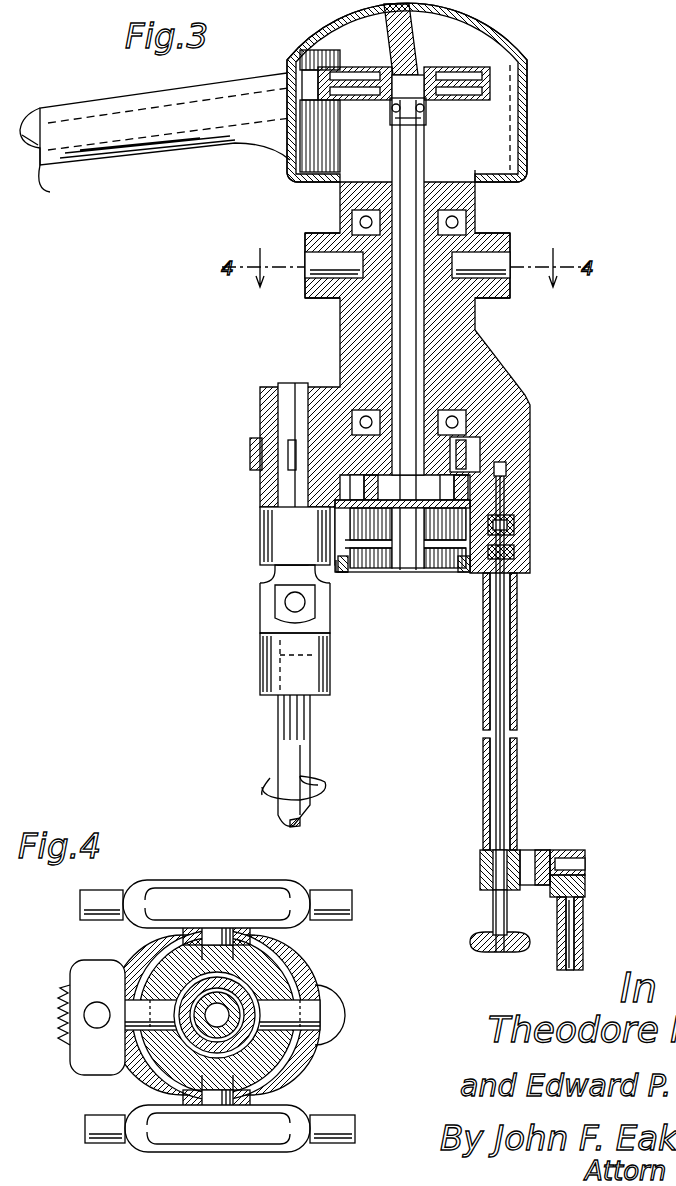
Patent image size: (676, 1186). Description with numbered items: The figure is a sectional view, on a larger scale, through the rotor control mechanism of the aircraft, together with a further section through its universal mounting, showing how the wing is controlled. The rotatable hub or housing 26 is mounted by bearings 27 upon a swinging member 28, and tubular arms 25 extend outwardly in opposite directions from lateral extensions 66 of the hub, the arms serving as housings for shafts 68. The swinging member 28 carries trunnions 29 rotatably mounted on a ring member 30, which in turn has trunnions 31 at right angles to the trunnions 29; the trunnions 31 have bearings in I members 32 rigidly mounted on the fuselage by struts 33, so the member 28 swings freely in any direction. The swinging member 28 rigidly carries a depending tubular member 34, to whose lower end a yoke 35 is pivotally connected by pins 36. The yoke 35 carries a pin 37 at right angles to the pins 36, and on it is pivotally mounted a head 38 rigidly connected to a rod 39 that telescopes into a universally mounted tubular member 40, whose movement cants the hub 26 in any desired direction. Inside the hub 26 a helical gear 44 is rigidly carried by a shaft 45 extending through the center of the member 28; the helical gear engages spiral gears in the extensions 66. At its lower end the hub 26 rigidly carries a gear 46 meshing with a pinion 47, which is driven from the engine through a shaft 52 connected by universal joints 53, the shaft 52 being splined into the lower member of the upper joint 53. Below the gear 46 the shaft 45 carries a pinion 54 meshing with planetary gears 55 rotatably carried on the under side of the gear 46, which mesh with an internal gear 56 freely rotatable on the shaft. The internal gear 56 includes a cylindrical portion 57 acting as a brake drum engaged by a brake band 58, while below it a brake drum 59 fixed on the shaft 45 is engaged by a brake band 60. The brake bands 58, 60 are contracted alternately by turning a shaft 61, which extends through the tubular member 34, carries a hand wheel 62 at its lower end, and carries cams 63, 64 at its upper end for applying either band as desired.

In FIG. 3, the arm 25 is at (158, 150).
In FIG. 3, the rotatable hub or housing 26 is at (515, 40).
In FIG. 3, the bearings 27 is at (458, 222).
In FIG. 3, the swinging member 28 is at (470, 360).
In FIG. 4, the swinging member 28 is at (80, 1065).
In FIG. 3, the trunnions 29 is at (305, 278).
In FIG. 4, the trunnions 29 is at (305, 1015).
In FIG. 3, the ring member 30 is at (505, 240).
In FIG. 4, the ring member 30 is at (283, 960).
In FIG. 4, the trunnions 31 is at (205, 890).
In FIG. 4, the I members 32 is at (172, 890).
In FIG. 4, the struts 33 is at (320, 892).
In FIG. 3, the depending tubular member 34 is at (517, 686).
In FIG. 3, the yoke 35 is at (542, 850).
In FIG. 3, the pins 36 is at (482, 864).
In FIG. 3, the pin 37 is at (570, 855).
In FIG. 3, the head 38 is at (585, 890).
In FIG. 3, the rod 39 is at (584, 928).
In FIG. 3, the tubular member 40 is at (584, 940).
In FIG. 3, the helical gear 44 is at (490, 100).
In FIG. 3, the shaft 45 is at (408, 336).
In FIG. 3, the gear 46 is at (480, 450).
In FIG. 3, the pinion 47 is at (250, 455).
In FIG. 4, the pinion 47 is at (60, 992).
In FIG. 3, the shaft 52 is at (302, 752).
In FIG. 3, the universal joints 53 is at (318, 652).
In FIG. 3, the pinion 54 is at (432, 502).
In FIG. 3, the planetary gears 55 is at (350, 487).
In FIG. 3, the internal gear 56 is at (364, 497).
In FIG. 3, the cylindrical portion 57 is at (462, 568).
In FIG. 3, the brake band 58 is at (336, 528).
In FIG. 3, the brake drum 59 is at (342, 572).
In FIG. 3, the brake band 60 is at (336, 572).
In FIG. 3, the shaft 61 is at (510, 635).
In FIG. 3, the hand wheel 62 is at (490, 952).
In FIG. 3, the cam 63 is at (515, 527).
In FIG. 3, the cam 64 is at (515, 551).
In FIG. 3, the lateral extensions 66 is at (412, 45).
In FIG. 3, the shafts 68 is at (48, 178).